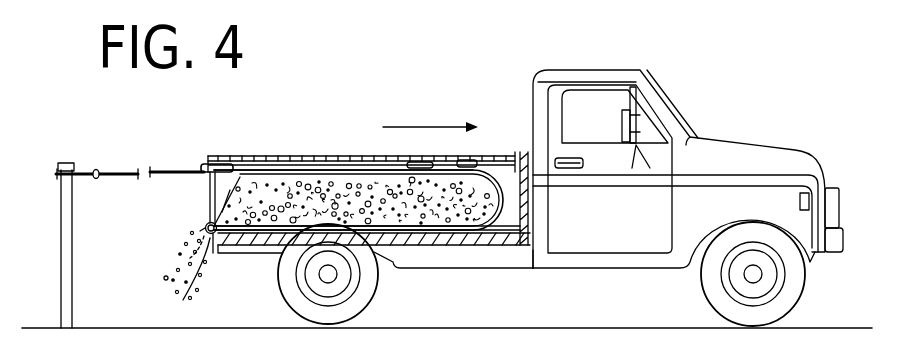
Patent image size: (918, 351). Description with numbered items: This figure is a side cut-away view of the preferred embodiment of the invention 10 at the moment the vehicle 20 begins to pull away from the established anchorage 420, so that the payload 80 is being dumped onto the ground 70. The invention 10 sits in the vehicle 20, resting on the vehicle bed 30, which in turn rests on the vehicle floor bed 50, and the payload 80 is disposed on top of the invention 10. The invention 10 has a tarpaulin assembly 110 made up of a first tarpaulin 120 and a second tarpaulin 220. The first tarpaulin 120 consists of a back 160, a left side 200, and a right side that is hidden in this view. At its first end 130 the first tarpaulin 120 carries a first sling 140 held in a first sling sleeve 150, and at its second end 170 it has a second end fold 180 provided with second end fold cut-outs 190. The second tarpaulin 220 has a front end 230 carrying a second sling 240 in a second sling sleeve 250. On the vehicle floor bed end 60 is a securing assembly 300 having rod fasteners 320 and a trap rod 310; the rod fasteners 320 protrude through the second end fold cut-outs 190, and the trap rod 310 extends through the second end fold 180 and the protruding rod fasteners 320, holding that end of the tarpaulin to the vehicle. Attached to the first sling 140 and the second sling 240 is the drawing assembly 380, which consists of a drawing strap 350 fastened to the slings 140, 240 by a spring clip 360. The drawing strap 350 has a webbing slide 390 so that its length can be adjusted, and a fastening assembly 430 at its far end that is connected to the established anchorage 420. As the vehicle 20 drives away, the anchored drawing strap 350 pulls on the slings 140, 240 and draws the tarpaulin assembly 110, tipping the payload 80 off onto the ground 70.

The invention 10 is at (327, 68).
The vehicle 20 is at (798, 149).
The vehicle bed 30 is at (514, 246).
The vehicle floor bed 50 is at (497, 244).
The vehicle floor bed end 60 is at (243, 246).
The ground 70 is at (822, 328).
The payload 80 is at (240, 191).
The tarpaulin assembly 110 is at (255, 240).
The first tarpaulin 120 is at (518, 153).
The first end 130 is at (507, 208).
The first sling 140 is at (452, 180).
The first sling sleeve 150 is at (479, 161).
The back 160 is at (502, 178).
The second end 170 is at (213, 247).
The second end fold 180 is at (181, 283).
The second end fold cut-outs 190 is at (200, 262).
The left side 200 is at (297, 165).
The second tarpaulin 220 is at (476, 163).
The front end 230 is at (508, 220).
The second sling 240 is at (447, 172).
The second sling sleeve 250 is at (477, 159).
The securing assembly 300 is at (210, 222).
The trap rod 310 is at (200, 231).
The rod fasteners 320 is at (205, 227).
The drawing strap 350 is at (122, 173).
The spring clip 360 is at (419, 162).
The drawing assembly 380 is at (421, 117).
The webbing slide 390 is at (219, 164).
The established anchorage 420 is at (60, 231).
The fastening assembly 430 is at (85, 172).